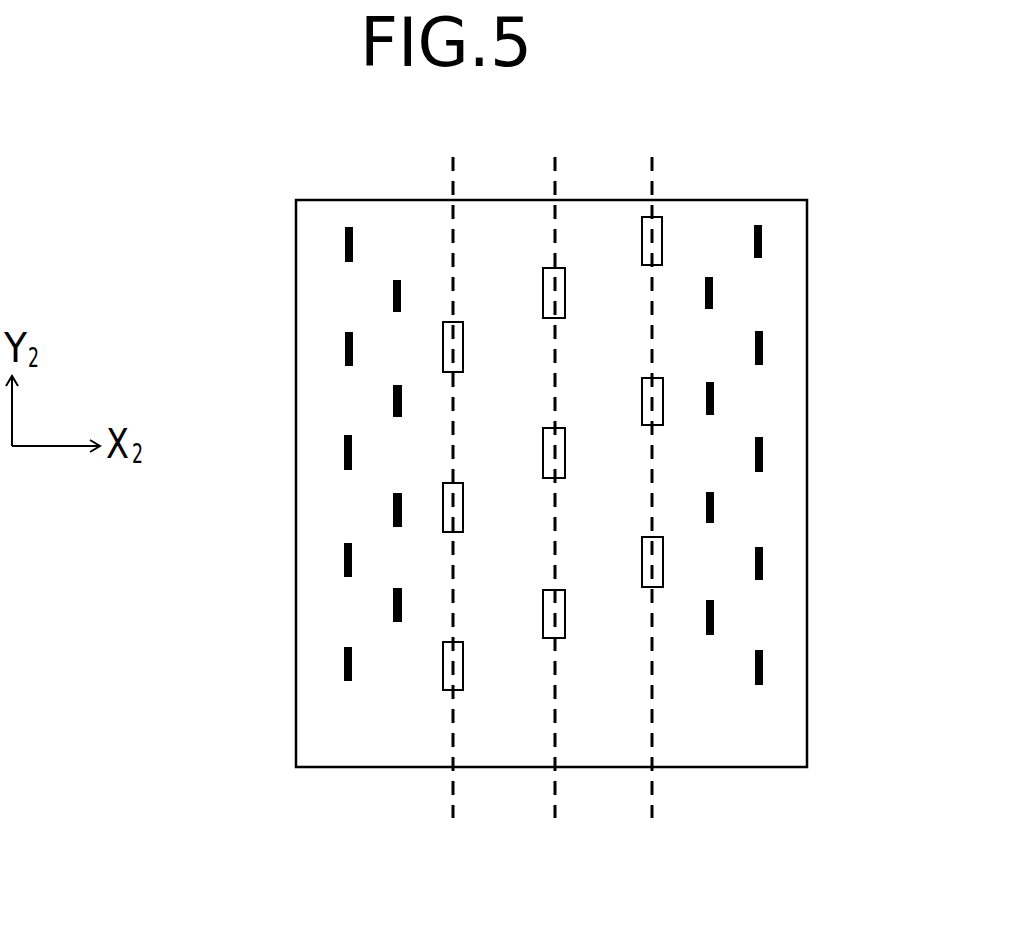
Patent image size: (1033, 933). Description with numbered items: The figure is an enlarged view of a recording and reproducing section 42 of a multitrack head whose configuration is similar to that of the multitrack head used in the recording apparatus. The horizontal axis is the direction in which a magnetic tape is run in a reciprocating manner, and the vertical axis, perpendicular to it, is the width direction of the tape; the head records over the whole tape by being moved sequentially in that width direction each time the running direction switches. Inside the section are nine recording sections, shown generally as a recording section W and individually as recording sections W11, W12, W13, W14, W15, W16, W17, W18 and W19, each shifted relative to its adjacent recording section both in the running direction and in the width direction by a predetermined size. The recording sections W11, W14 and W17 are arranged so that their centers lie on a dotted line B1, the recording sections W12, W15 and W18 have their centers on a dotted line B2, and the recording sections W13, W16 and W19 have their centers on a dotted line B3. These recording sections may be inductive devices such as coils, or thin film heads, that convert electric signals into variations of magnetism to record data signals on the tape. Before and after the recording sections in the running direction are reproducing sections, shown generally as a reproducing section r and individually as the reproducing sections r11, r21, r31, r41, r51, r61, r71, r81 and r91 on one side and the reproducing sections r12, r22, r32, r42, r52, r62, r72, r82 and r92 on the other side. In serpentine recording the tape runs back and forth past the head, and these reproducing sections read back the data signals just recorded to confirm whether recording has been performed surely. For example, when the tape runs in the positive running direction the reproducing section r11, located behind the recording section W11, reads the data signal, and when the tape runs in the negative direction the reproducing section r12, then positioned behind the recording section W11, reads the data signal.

The recording and reproducing section 42 is at (776, 199).
The recording section W is at (409, 231).
The reproducing section r is at (712, 128).
The dotted line B1 is at (650, 517).
The dotted line B2 is at (553, 517).
The dotted line B3 is at (453, 517).
The recording section W11 is at (642, 247).
The recording section W12 is at (597, 288).
The recording section W13 is at (463, 340).
The recording section W14 is at (642, 393).
The recording section W15 is at (598, 437).
The recording section W16 is at (463, 504).
The recording section W17 is at (642, 552).
The recording section W18 is at (595, 600).
The recording section W19 is at (493, 650).
The reproducing section r11 is at (345, 241).
The reproducing section r21 is at (393, 297).
The reproducing section r31 is at (345, 349).
The reproducing section r41 is at (393, 402).
The reproducing section r51 is at (345, 452).
The reproducing section r61 is at (393, 510).
The reproducing section r71 is at (345, 558).
The reproducing section r81 is at (393, 606).
The reproducing section r91 is at (345, 665).
The reproducing section r12 is at (762, 238).
The reproducing section r22 is at (713, 292).
The reproducing section r32 is at (763, 345).
The reproducing section r42 is at (714, 398).
The reproducing section r52 is at (763, 455).
The reproducing section r62 is at (714, 508).
The reproducing section r72 is at (763, 560).
The reproducing section r82 is at (714, 617).
The reproducing section r92 is at (763, 667).